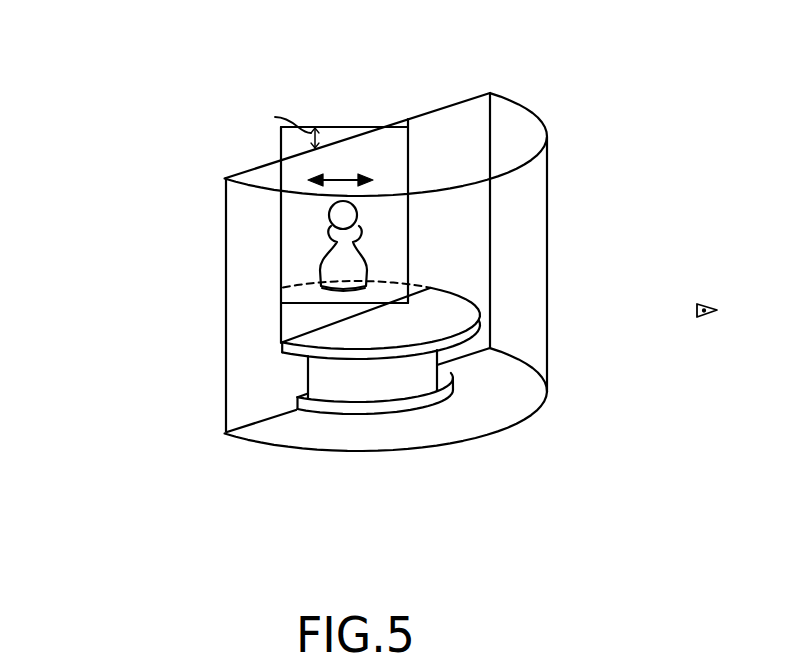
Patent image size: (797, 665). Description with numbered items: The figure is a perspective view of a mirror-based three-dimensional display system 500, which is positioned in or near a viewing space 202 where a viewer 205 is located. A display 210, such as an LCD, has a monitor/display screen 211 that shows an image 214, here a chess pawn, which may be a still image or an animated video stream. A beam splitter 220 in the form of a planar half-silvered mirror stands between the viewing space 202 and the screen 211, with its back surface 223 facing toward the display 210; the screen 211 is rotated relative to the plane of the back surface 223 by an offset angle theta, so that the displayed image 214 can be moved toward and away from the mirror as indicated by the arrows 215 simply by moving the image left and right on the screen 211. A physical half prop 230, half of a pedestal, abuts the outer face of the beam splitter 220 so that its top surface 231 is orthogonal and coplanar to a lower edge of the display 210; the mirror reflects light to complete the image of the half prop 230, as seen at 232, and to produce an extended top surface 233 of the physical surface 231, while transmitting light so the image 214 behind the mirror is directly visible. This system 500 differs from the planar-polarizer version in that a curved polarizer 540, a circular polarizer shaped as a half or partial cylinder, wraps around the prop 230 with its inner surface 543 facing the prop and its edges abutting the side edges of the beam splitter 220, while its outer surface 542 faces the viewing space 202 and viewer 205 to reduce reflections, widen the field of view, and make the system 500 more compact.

The mirror-based 3D display system 500 is at (118, 179).
The curved polarizer 540 is at (490, 272).
The outer surface 542 is at (547, 236).
The inner surface 543 is at (601, 107).
The beam splitter 220 is at (499, 100).
The monitor/display screen 211 is at (343, 139).
The back surface 223 is at (268, 172).
The display 210 is at (357, 121).
The arrows 215 is at (343, 180).
The image 214 is at (352, 210).
The half prop 230 is at (340, 412).
The top surface 231 is at (297, 343).
The completed image of the half prop 232 is at (262, 314).
The extended top surface 233 is at (290, 315).
The viewer 205 is at (735, 294).
The viewing space 202 is at (679, 395).